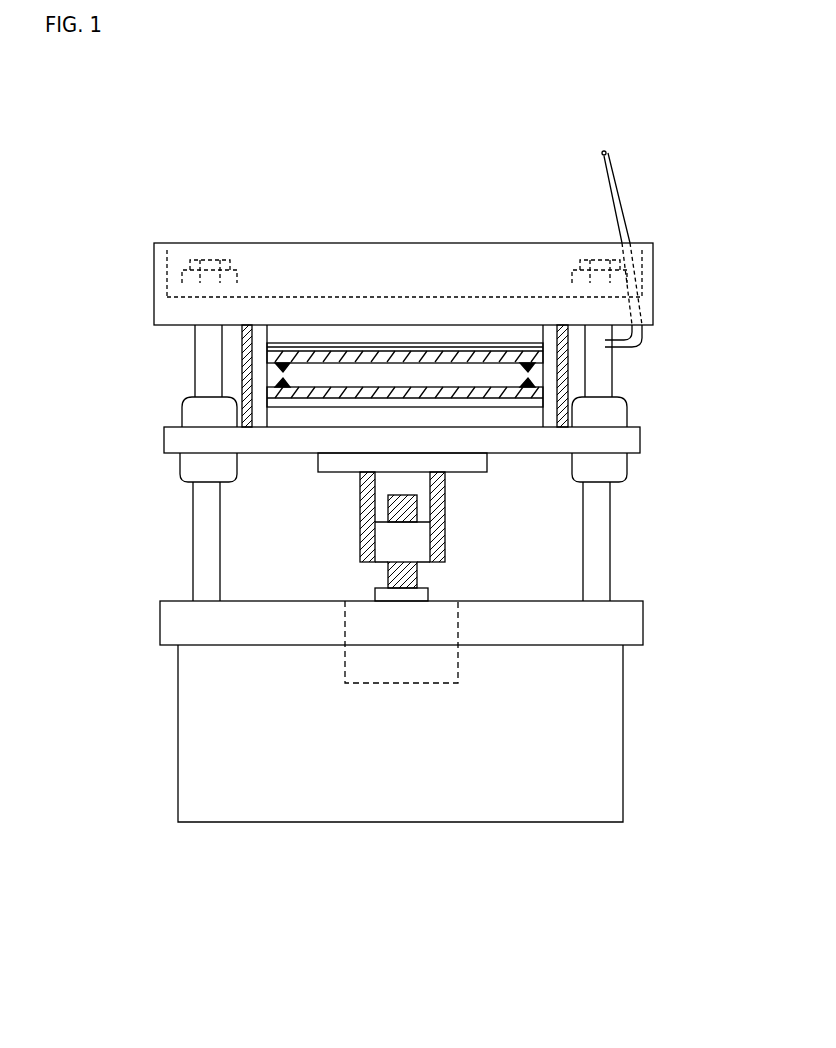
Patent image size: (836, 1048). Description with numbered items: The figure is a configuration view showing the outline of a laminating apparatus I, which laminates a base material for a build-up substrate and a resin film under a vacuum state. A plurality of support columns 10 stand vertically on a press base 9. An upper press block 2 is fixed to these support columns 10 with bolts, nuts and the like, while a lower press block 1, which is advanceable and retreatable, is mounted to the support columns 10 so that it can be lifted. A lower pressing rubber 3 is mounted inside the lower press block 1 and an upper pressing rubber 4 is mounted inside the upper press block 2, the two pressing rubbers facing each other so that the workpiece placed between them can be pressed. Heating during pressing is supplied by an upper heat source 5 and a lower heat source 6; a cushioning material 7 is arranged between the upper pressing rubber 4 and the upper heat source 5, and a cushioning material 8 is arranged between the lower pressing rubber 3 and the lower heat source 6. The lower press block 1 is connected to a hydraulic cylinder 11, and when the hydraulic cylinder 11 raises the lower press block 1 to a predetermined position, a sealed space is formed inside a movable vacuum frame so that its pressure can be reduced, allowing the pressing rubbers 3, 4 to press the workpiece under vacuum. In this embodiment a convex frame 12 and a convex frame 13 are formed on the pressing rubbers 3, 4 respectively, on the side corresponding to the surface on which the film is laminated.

The lower press block 1 is at (163, 438).
The upper press block 2 is at (154, 275).
The lower pressing rubber 3 is at (275, 393).
The upper pressing rubber 4 is at (388, 345).
The upper heat source 5 is at (283, 330).
The lower heat source 6 is at (182, 417).
The cushioning material 7 is at (332, 342).
The cushioning material 8 is at (265, 402).
The press base 9 is at (612, 628).
The support columns 10 is at (205, 537).
The hydraulic cylinder 11 is at (403, 663).
The convex frame 12 is at (587, 400).
The convex frame 13 is at (610, 348).